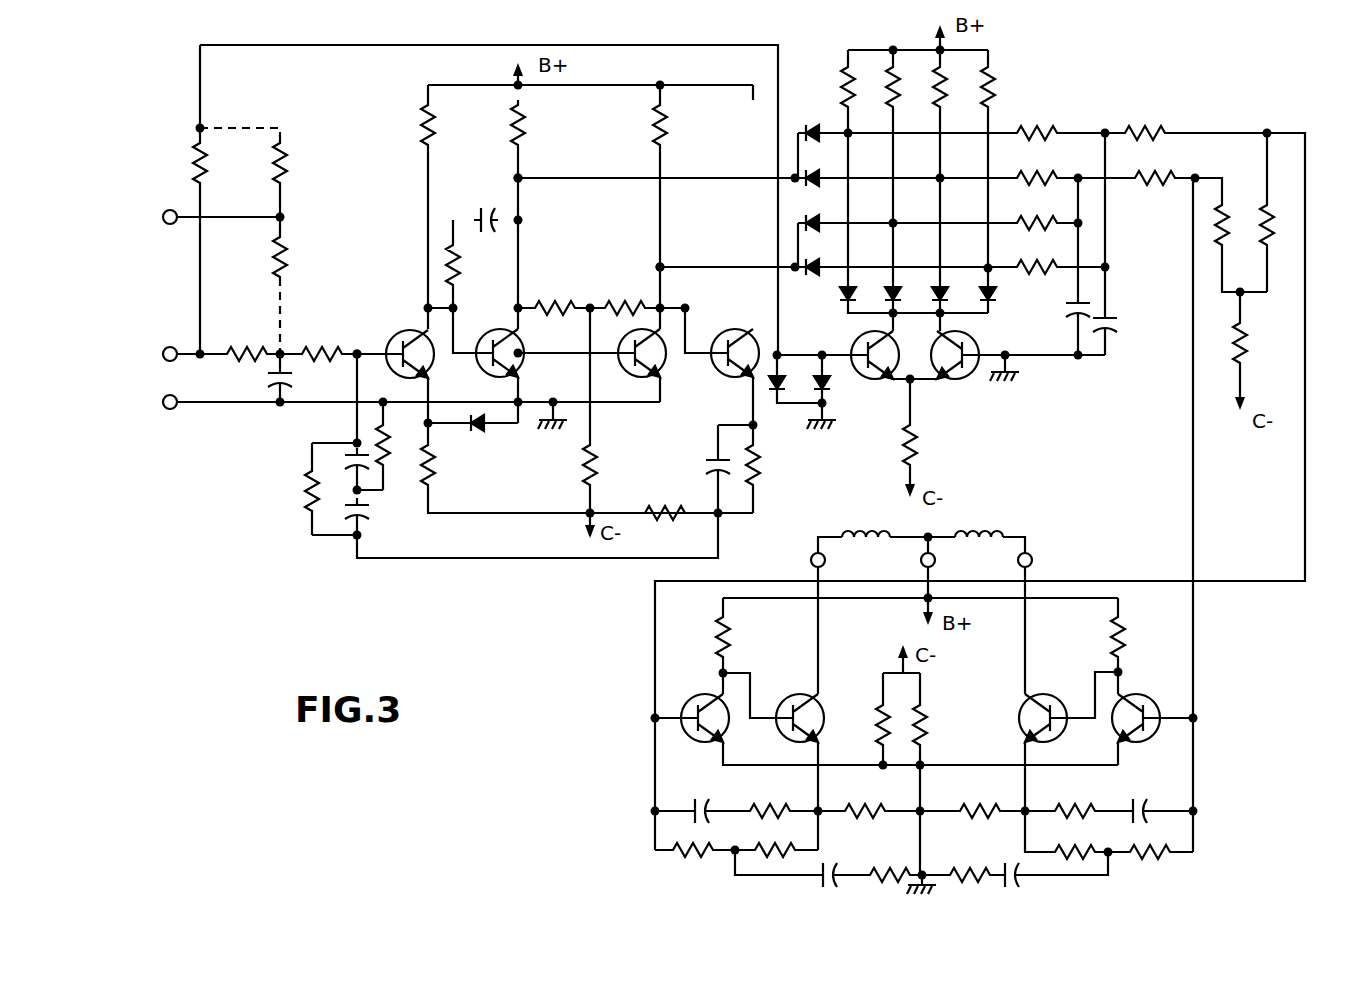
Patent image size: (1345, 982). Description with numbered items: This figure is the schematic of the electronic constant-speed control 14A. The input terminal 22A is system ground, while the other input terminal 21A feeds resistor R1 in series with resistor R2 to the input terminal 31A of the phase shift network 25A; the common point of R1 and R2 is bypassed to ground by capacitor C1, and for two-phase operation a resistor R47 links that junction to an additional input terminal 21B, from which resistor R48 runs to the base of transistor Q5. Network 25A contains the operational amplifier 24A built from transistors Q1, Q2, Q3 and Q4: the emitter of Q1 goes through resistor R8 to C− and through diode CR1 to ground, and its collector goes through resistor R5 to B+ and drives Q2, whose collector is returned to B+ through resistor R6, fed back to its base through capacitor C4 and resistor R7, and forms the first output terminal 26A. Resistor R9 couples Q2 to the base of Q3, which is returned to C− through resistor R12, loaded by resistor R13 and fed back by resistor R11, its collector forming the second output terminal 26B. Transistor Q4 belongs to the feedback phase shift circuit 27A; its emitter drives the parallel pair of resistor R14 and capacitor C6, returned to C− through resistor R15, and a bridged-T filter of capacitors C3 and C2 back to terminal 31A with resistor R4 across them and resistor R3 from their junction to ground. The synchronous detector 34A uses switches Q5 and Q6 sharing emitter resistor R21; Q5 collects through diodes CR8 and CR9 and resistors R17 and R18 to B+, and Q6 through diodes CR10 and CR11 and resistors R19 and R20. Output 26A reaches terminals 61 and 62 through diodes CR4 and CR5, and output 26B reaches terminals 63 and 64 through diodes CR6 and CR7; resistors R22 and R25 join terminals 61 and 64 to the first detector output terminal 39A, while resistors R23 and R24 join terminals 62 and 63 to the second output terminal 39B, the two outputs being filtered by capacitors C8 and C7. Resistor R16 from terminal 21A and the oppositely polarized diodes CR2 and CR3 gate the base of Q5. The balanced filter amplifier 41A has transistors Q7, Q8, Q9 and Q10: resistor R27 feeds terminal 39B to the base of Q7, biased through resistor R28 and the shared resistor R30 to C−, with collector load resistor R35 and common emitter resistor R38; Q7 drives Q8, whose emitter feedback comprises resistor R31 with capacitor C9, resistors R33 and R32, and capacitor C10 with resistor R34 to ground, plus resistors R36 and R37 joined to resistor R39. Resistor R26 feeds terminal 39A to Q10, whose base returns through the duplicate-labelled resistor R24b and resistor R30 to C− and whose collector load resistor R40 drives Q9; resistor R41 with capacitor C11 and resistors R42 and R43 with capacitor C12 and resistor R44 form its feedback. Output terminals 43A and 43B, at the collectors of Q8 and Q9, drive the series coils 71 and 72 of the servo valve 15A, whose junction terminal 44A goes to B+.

The resistor R16 is at (194, 170).
The resistor R48 is at (294, 172).
The resistor R47 is at (293, 249).
The additional input terminal 21B is at (164, 224).
The input terminal 21A is at (167, 343).
The input terminal 22A is at (164, 409).
The resistor R1 is at (238, 370).
The resistor R2 is at (324, 366).
The capacitor C1 is at (272, 395).
The input terminal 31A is at (354, 338).
The transistor Q1 is at (404, 329).
The capacitor C2 is at (349, 447).
The resistor R3 is at (385, 440).
The resistor R4 is at (298, 495).
The feedback phase shift circuit 27A is at (298, 542).
The capacitor C3 is at (380, 515).
The resistor R5 is at (420, 118).
The phase shift network 25A is at (410, 250).
The resistor R7 is at (457, 274).
The capacitor C4 is at (486, 203).
The resistor R6 is at (513, 128).
The output terminal 26A is at (524, 177).
The operational amplifier 24A is at (612, 230).
The resistor R13 is at (650, 128).
The output terminal 26B is at (664, 264).
The transistor Q2 is at (515, 346).
The resistor R9 is at (568, 280).
The feedback resistor R11 is at (638, 282).
The transistor Q3 is at (628, 380).
The transistor Q4 is at (710, 380).
The diode CR1 is at (477, 430).
The resistor R8 is at (434, 484).
The resistor R12 is at (580, 478).
The resistor R15 is at (664, 506).
The capacitor C6 is at (706, 467).
The resistor R14 is at (766, 474).
The electronic control 14A is at (578, 590).
The synchronous detector 34A is at (854, 44).
The resistor R17 is at (842, 80).
The resistor R18 is at (887, 92).
The resistor R19 is at (934, 92).
The resistor R20 is at (995, 82).
The diode CR4 is at (828, 120).
The diode CR5 is at (836, 152).
The diode CR6 is at (828, 196).
The diode CR7 is at (836, 244).
The terminal 61 is at (850, 135).
The terminal 62 is at (938, 176).
The terminal 63 is at (892, 221).
The terminal 64 is at (985, 266).
The diode CR8 is at (840, 292).
The diode CR9 is at (888, 294).
The diode CR10 is at (936, 294).
The diode CR11 is at (1002, 300).
The resistor R22 is at (1034, 127).
The resistor R23 is at (1050, 164).
The resistor R24 is at (1044, 218).
The resistor R25 is at (1045, 262).
The first detector output terminal 39A is at (1105, 130).
The second detector output terminal 39B is at (1078, 175).
The resistor R26 is at (1163, 126).
The resistor R27 is at (1144, 188).
The resistor R28 is at (1224, 210).
The resistor R24b is at (1260, 238).
The resistor R30 is at (1262, 338).
The capacitor C7 is at (1068, 313).
The capacitor C8 is at (1119, 327).
The transistor Q5 is at (856, 338).
The transistor Q6 is at (946, 382).
The diode CR2 is at (780, 402).
The diode CR3 is at (832, 387).
The resistor R21 is at (926, 466).
The speed control device 15A is at (995, 520).
The operating coil 72 is at (848, 534).
The operating coil 71 is at (1008, 532).
The output terminal 43B is at (826, 560).
The third terminal 44A is at (936, 560).
The output terminal 43A is at (1033, 560).
The filter amplifier 41A is at (877, 633).
The resistor R40 is at (714, 632).
The input transistor Q10 is at (690, 698).
The output transistor Q9 is at (790, 697).
The resistor R38 is at (874, 703).
The resistor R39 is at (929, 701).
The transistor Q8 is at (1042, 690).
The transistor Q7 is at (1140, 690).
The resistor R35 is at (1124, 618).
The capacitor C11 is at (704, 796).
The resistor R41 is at (780, 804).
The resistor R37 is at (878, 804).
The resistor R36 is at (982, 804).
The resistor R31 is at (1085, 804).
The capacitor C9 is at (1136, 800).
The resistor R43 is at (682, 858).
The resistor R42 is at (780, 848).
The capacitor C12 is at (828, 866).
The resistor R44 is at (880, 874).
The resistor R34 is at (959, 873).
The capacitor C10 is at (1008, 865).
The resistor R33 is at (1080, 852).
The resistor R32 is at (1163, 848).